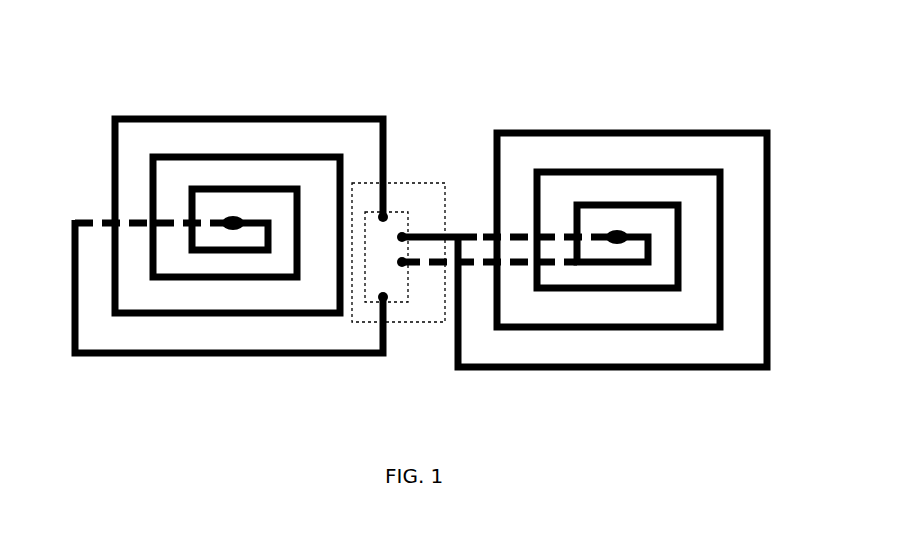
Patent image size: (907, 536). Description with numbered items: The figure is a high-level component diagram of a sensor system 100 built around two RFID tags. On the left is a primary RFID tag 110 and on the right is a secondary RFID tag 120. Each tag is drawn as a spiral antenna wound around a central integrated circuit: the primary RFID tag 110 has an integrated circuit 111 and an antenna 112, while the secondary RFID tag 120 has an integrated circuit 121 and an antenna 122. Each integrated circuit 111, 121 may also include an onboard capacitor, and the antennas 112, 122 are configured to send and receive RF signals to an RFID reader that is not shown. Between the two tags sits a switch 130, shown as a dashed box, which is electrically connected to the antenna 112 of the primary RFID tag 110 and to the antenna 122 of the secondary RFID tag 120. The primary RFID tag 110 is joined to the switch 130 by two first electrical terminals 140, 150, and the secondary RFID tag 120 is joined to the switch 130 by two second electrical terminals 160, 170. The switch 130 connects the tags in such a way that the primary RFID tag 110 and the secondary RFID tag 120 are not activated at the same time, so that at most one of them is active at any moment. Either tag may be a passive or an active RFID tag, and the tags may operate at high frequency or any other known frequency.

The sensor system 100 is at (768, 62).
The primary RFID tag 110 is at (97, 110).
The integrated circuit 111 is at (233, 223).
The antenna 112 is at (115, 185).
The secondary RFID tag 120 is at (780, 122).
The integrated circuit 121 is at (617, 237).
The antenna 122 is at (770, 230).
The switch 130 is at (405, 215).
The first electrical terminal 140 is at (383, 217).
The first electrical terminal 150 is at (387, 303).
The second electrical terminal 160 is at (402, 237).
The second electrical terminal 170 is at (405, 267).